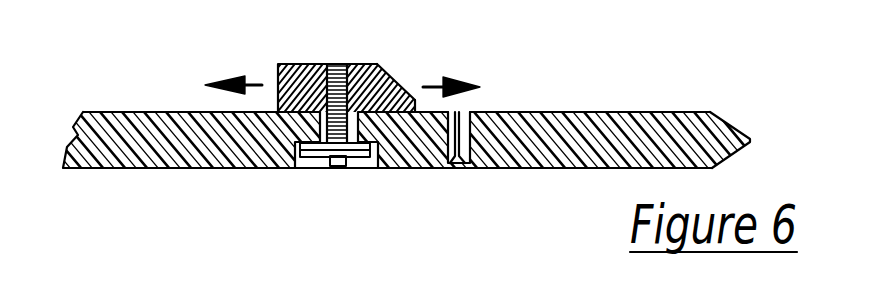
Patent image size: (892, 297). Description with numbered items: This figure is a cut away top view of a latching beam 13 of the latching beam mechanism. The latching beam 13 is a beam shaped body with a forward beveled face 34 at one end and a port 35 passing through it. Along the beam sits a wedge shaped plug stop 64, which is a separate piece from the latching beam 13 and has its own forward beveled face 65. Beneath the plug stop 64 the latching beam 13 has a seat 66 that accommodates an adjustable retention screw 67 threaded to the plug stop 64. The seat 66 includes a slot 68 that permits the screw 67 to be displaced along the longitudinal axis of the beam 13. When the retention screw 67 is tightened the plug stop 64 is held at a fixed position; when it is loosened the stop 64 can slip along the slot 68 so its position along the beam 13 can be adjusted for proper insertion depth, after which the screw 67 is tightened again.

The latching beam 13 is at (590, 168).
The forward beveled face 34 is at (723, 120).
The port 35 is at (462, 168).
The wedge shaped plug stop 64 is at (367, 64).
The forward beveled face 65 is at (402, 88).
The seat 66 is at (370, 168).
The retention screw 67 is at (318, 168).
The slot 68 is at (318, 95).